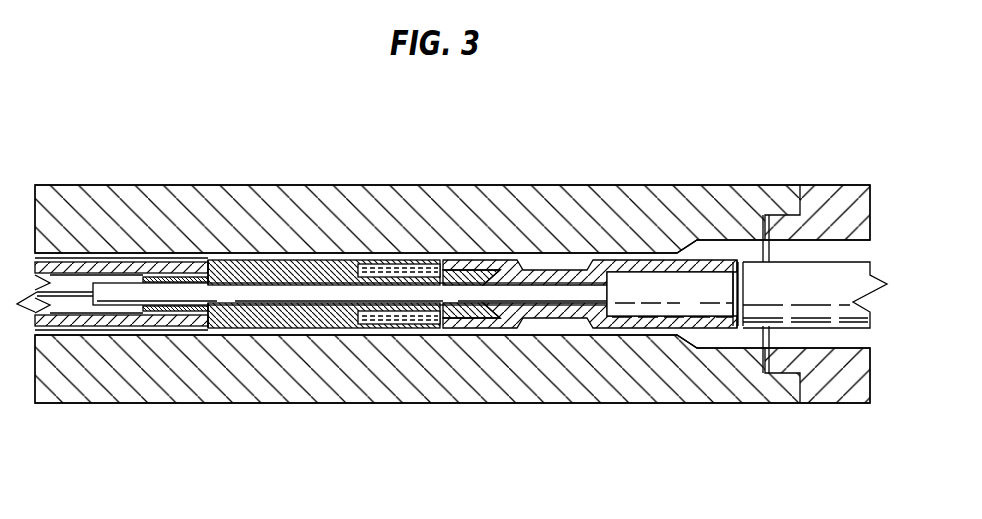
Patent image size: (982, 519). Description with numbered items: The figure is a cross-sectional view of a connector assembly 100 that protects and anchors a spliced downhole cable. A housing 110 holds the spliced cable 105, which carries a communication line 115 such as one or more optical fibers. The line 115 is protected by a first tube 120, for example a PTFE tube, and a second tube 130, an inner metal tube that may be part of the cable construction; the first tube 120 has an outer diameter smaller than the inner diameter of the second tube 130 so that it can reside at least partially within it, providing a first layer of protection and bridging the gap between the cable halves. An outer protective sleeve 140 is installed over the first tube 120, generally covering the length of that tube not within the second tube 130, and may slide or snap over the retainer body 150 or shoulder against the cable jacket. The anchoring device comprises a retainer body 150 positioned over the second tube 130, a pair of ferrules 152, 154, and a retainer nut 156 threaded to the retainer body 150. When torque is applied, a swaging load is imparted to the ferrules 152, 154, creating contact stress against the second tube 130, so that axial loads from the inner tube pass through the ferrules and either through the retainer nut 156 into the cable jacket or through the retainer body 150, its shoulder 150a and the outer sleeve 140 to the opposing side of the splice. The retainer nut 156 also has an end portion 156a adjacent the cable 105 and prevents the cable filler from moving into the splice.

The connector assembly 100 is at (684, 154).
The spliced cable 105 is at (815, 272).
The housing 110 is at (657, 192).
The communication line 115 is at (67, 297).
The first tube 120 is at (65, 292).
The second tube 130 is at (110, 283).
The outer protective sleeve 140 is at (187, 260).
The retainer body 150 is at (293, 270).
The shoulder 150a is at (213, 266).
The ferrule 152 is at (445, 268).
The ferrule 154 is at (483, 272).
The retainer nut 156 is at (548, 262).
The tube end 156a is at (715, 262).